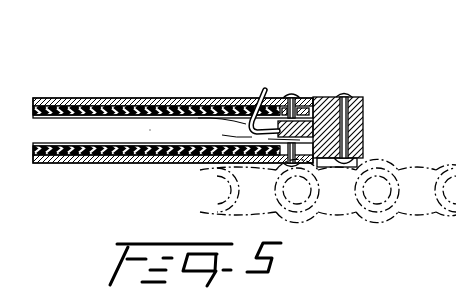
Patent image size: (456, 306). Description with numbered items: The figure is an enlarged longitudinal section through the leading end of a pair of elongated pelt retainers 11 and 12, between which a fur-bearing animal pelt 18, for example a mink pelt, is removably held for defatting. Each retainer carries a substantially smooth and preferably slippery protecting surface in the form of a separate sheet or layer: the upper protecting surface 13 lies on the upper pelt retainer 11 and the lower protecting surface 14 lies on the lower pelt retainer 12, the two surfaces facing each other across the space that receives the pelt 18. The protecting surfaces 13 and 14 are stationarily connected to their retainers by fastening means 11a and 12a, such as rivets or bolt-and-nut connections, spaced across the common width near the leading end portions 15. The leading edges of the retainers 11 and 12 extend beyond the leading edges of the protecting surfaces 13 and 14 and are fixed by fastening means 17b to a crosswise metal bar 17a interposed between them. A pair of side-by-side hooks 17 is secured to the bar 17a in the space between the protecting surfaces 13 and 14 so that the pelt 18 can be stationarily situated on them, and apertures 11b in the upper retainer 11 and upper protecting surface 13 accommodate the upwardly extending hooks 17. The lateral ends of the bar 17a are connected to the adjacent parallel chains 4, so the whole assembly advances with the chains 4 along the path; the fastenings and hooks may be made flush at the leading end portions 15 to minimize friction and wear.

The chains 4 is at (406, 206).
The pelt retainer 11 is at (191, 86).
The fastening means 11a is at (291, 96).
The apertures 11b is at (248, 97).
The pelt retainer 12 is at (192, 196).
The fastening means 12a is at (296, 164).
The protecting surface 13 is at (166, 97).
The protecting surface 14 is at (119, 163).
The leading end portions 15 is at (231, 97).
The hooks 17 is at (332, 93).
The metal bar 17a is at (363, 122).
The fastening means 17b is at (348, 95).
The animal pelt 18 is at (145, 130).